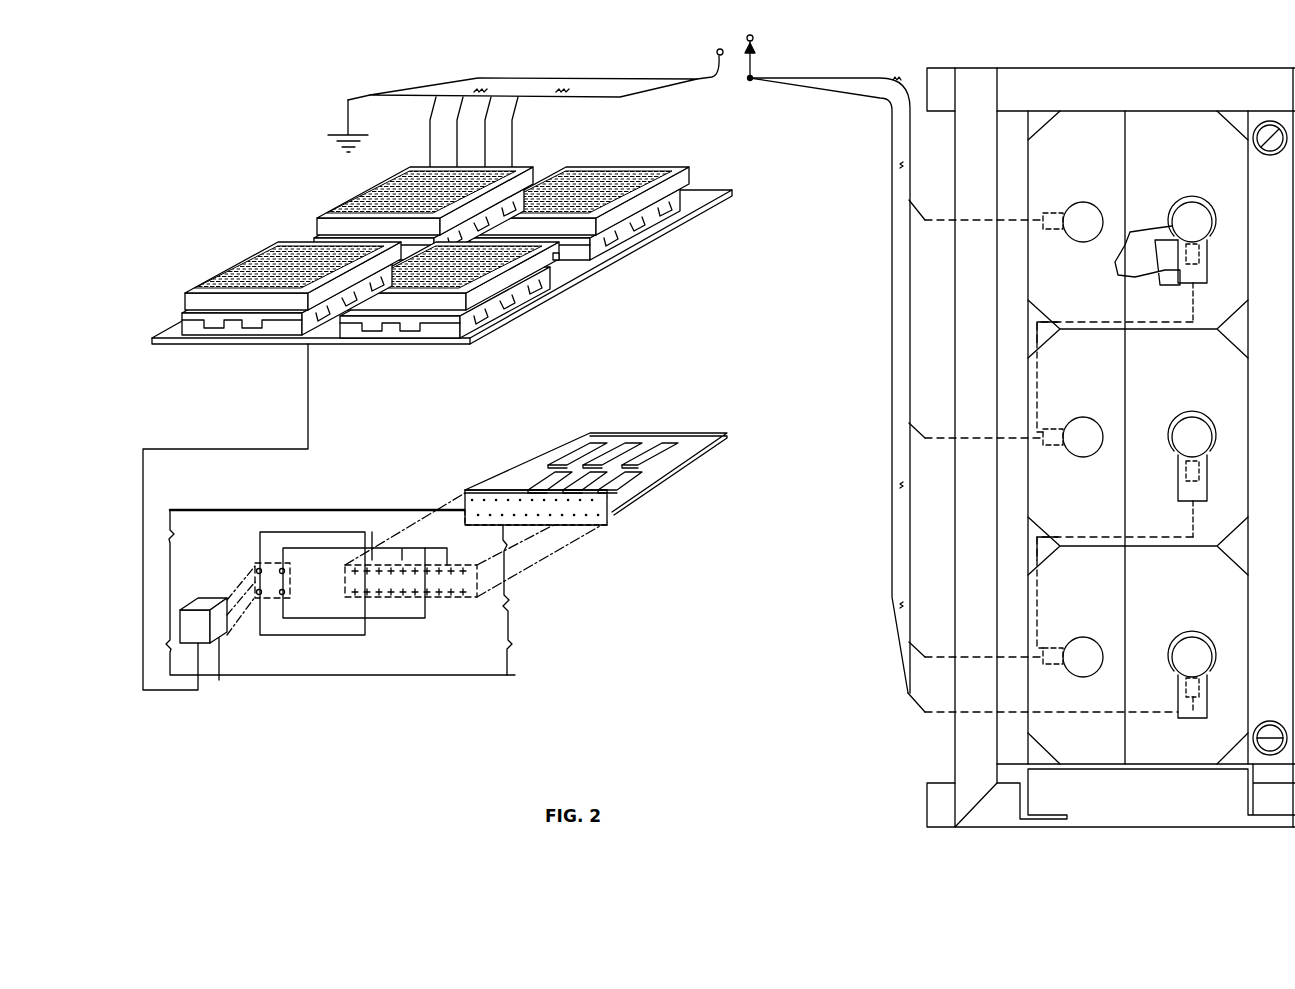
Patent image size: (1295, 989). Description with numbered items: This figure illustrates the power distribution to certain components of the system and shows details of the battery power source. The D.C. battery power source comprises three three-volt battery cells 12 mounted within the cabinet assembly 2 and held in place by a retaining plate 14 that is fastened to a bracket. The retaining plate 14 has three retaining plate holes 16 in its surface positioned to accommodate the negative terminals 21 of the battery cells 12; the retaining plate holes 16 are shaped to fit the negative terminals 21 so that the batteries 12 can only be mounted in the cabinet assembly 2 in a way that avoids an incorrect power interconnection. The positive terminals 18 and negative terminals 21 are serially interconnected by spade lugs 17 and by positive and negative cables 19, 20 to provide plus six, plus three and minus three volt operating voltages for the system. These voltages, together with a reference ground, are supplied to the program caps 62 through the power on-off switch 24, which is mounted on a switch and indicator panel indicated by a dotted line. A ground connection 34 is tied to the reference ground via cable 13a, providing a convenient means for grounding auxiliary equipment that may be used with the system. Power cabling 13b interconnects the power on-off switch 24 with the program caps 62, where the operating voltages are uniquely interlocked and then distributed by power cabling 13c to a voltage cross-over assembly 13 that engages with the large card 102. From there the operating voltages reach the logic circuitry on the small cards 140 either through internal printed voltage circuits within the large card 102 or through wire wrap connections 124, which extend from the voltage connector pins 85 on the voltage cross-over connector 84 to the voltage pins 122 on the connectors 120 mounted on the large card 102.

The cabinet assembly 2 is at (1017, 72).
The battery cells 12 is at (1028, 272).
The voltage cross-over assembly 13 is at (211, 652).
The cable 13a is at (367, 100).
The power cabling 13b is at (538, 84).
The power cabling 13c is at (308, 421).
The retaining plate 14 is at (1128, 283).
The retaining plate holes 16 is at (1170, 222).
The spade lugs 17 is at (1060, 668).
The positive terminals 18 is at (1080, 204).
The positive cable 19 is at (1040, 330).
The negative cable 20 is at (1082, 538).
The negative terminals 21 is at (1212, 208).
The power on-off switch 24 is at (740, 85).
The ground connection 34 is at (338, 131).
The program caps 62 is at (262, 258).
The voltage cross-over connector 84 is at (290, 576).
The voltage connector pins 85 is at (258, 569).
The large card 102 is at (319, 512).
The connectors 120 is at (443, 597).
The voltage pins 122 is at (427, 590).
The wire wrap connections 124 is at (402, 548).
The small cards 140 is at (657, 480).